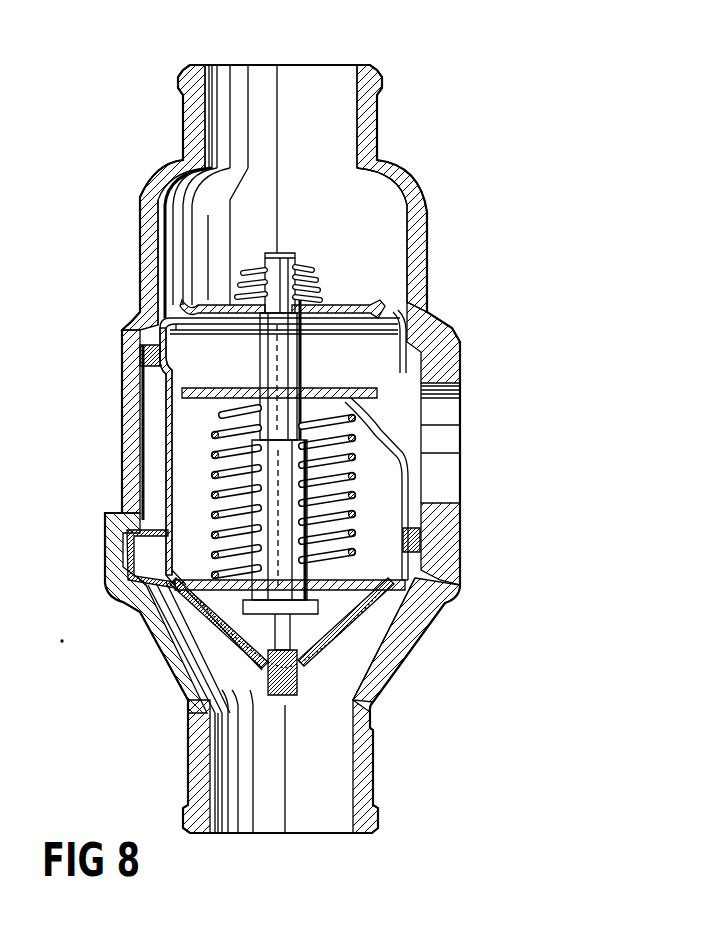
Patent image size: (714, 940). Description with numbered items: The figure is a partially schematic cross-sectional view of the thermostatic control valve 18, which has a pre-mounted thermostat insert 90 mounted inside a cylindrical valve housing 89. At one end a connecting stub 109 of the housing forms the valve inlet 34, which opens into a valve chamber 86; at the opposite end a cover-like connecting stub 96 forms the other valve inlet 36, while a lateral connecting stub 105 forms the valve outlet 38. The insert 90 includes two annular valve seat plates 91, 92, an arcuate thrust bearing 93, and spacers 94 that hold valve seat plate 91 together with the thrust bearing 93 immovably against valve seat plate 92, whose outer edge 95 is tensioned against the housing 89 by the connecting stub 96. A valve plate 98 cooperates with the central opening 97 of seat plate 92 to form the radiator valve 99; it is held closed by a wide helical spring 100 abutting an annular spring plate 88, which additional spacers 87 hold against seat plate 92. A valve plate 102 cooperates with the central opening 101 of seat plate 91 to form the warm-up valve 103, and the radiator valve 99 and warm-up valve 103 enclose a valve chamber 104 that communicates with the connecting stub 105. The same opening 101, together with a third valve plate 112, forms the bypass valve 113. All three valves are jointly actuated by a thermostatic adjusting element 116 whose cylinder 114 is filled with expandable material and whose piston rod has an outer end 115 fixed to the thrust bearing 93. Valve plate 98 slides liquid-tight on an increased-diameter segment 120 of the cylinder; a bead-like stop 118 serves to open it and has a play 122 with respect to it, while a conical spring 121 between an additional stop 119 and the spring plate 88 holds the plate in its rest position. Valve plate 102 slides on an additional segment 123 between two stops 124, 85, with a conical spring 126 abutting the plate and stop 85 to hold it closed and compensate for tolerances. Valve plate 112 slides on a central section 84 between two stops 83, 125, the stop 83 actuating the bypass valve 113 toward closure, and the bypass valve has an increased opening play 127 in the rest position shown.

The thermostatic control valve 18 is at (115, 245).
The valve inlet 34 is at (298, 80).
The valve inlet 36 is at (303, 782).
The valve outlet 38 is at (448, 438).
The stop 83 is at (260, 460).
The central section 84 is at (300, 398).
The stop 85 is at (305, 256).
The valve chamber 86 is at (365, 195).
The spacers 87 is at (405, 510).
The spring plate 88 is at (220, 425).
The valve housing 89 is at (427, 210).
The thermostat insert 90 is at (403, 596).
The valve seat plate 91 is at (140, 305).
The valve seat plate 92 is at (447, 592).
The thrust bearing 93 is at (325, 650).
The spacers 94 is at (166, 470).
The outer edge 95 is at (445, 530).
The connecting stub 96 is at (365, 778).
The central opening 97 is at (353, 593).
The valve plate 98 is at (198, 545).
The radiator valve 99 is at (218, 606).
The helical spring 100 is at (340, 470).
The central opening 101 is at (356, 326).
The valve plate 102 is at (370, 310).
The warm-up valve 103 is at (210, 300).
The valve chamber 104 is at (145, 430).
The connecting stub 105 is at (445, 340).
The connecting stub 109 is at (383, 110).
The valve plate 112 is at (160, 385).
The bypass valve 113 is at (393, 398).
The cylinder 114 is at (305, 500).
The outer end 115 is at (275, 660).
The thermostatic adjusting element 116 is at (250, 240).
The bead-like stop 118 is at (305, 660).
The stop 119 is at (265, 490).
The segment 120 is at (245, 610).
The conical spring 121 is at (372, 445).
The play 122 is at (340, 630).
The segment 123 is at (270, 283).
The stop 124 is at (285, 350).
The stop 125 is at (262, 390).
The conical spring 126 is at (320, 298).
The play 127 is at (202, 386).